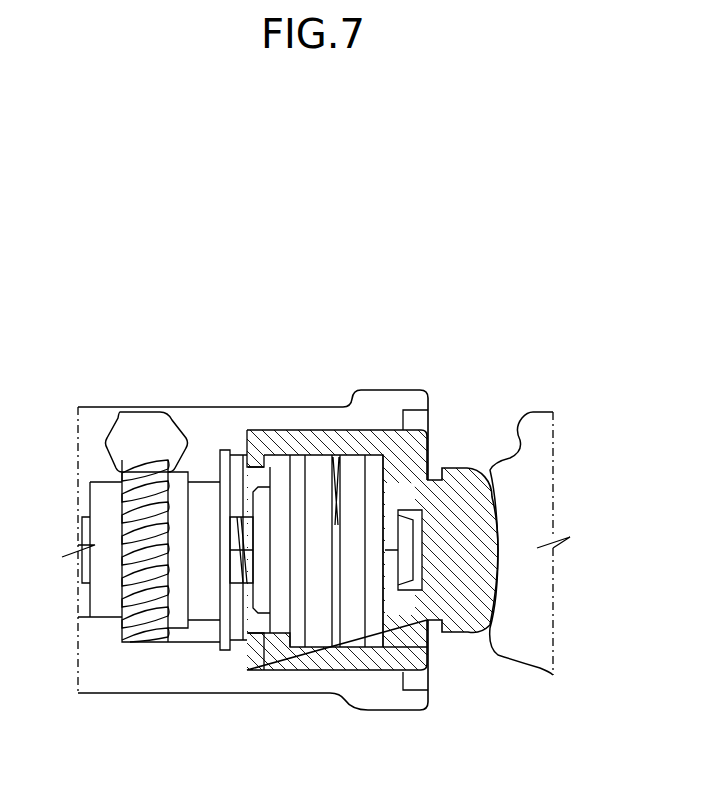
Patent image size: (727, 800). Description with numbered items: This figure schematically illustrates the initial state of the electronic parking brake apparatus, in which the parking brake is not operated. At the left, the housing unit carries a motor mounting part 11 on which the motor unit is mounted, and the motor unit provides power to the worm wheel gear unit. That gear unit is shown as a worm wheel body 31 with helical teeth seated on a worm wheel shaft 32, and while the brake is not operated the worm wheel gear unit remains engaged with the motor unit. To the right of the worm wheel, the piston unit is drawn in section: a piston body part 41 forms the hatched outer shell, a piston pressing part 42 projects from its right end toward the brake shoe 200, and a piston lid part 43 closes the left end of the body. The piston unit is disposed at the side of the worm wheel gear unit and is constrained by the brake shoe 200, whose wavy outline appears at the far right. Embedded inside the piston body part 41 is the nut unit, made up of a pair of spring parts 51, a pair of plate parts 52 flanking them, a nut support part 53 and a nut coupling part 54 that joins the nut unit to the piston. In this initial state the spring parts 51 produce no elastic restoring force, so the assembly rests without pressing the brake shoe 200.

The motor mounting part 11 is at (125, 437).
The worm wheel body 31 is at (147, 630).
The worm wheel shaft 32 is at (244, 580).
The piston body part 41 is at (307, 442).
The piston pressing part 42 is at (458, 488).
The piston lid part 43 is at (253, 434).
The spring parts 51 is at (338, 630).
The plate parts 52 is at (322, 635).
The nut support part 53 is at (298, 633).
The nut coupling part 54 is at (405, 666).
The brake shoe 200 is at (533, 422).